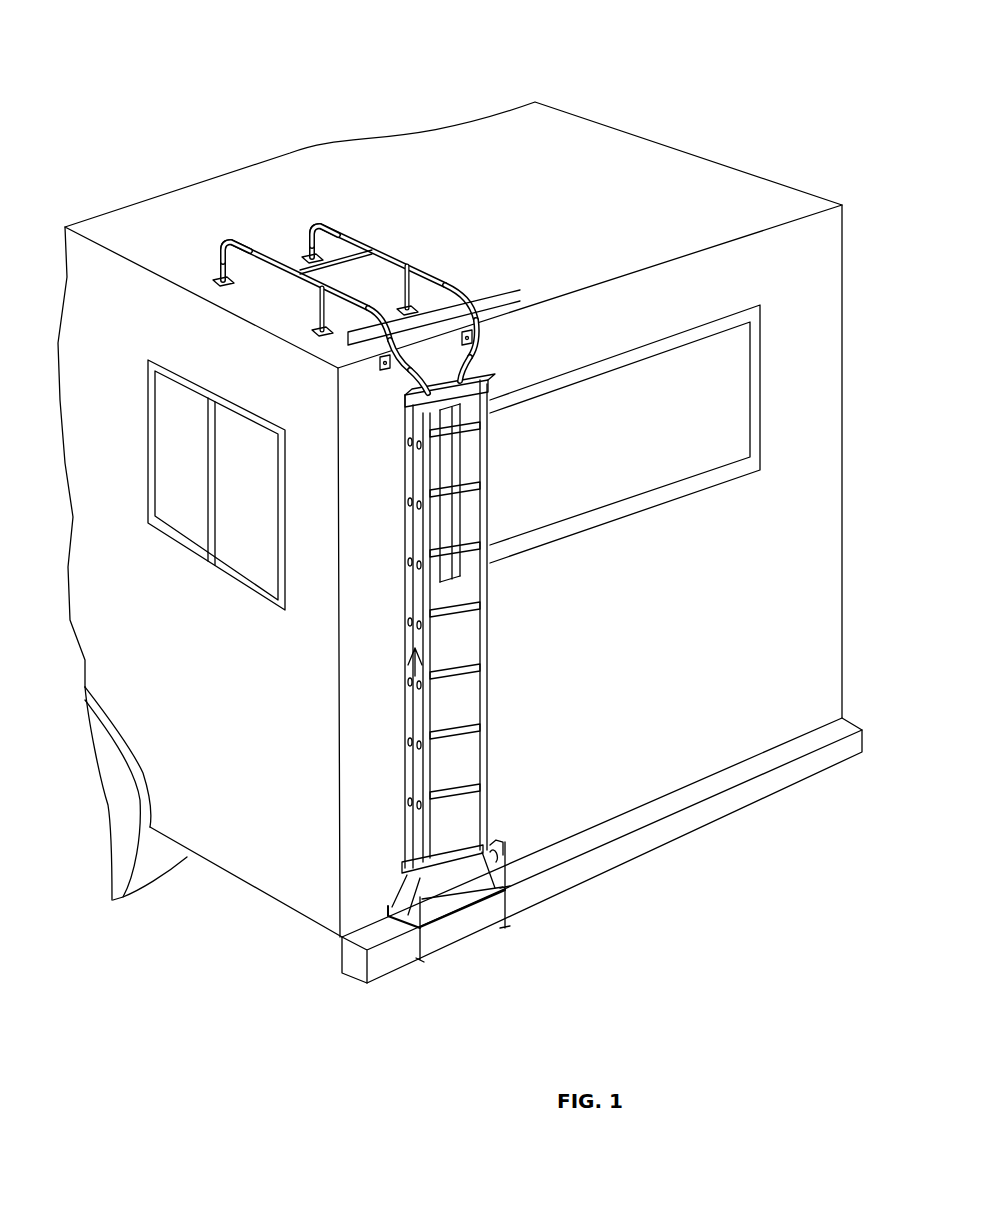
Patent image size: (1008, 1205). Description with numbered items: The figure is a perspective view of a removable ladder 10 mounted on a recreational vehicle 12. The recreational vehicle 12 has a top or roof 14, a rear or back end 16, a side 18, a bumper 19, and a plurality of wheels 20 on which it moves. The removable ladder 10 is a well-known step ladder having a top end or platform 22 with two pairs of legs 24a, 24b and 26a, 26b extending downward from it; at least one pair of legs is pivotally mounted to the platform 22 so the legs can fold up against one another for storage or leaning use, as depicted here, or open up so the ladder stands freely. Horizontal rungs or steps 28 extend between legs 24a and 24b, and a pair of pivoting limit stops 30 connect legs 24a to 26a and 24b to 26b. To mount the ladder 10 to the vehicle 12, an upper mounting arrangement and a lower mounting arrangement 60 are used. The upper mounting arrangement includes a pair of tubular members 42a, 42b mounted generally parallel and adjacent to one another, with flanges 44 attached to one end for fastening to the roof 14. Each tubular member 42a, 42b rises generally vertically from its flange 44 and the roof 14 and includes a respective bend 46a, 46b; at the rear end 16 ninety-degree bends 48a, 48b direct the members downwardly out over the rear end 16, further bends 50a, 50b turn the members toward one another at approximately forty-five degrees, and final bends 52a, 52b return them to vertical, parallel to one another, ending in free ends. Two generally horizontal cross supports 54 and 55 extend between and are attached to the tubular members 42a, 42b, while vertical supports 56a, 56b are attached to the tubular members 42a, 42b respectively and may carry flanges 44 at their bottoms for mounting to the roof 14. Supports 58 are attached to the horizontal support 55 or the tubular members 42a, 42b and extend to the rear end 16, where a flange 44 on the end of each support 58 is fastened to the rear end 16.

The removable ladder 10 is at (565, 818).
The recreational vehicle 12 is at (430, 97).
The roof 14 is at (568, 135).
The rear end 16 is at (800, 568).
The side 18 is at (240, 665).
The bumper 19 is at (792, 775).
The wheels 20 is at (148, 873).
The top end 22 is at (457, 393).
The leg 24a is at (405, 787).
The leg 24b is at (482, 752).
The leg 26a is at (405, 758).
The leg 26b is at (468, 703).
The rungs 28 is at (466, 612).
The pivoting limit stops 30 is at (405, 658).
The tubular member 42a is at (267, 260).
The tubular member 42b is at (393, 256).
The flanges 44 is at (222, 278).
The bend 46a is at (227, 242).
The bend 46b is at (318, 225).
The 90° bend 48a is at (360, 333).
The 90° bend 48b is at (478, 300).
The bend 50a is at (395, 378).
The bend 50b is at (478, 345).
The bend 52a is at (403, 432).
The bend 52b is at (474, 374).
The cross support 54 is at (348, 242).
The cross support 55 is at (480, 297).
The vertical support 56a is at (337, 324).
The vertical support 56b is at (423, 290).
The supports 58 is at (383, 363).
The lower mounting arrangement 60 is at (355, 898).